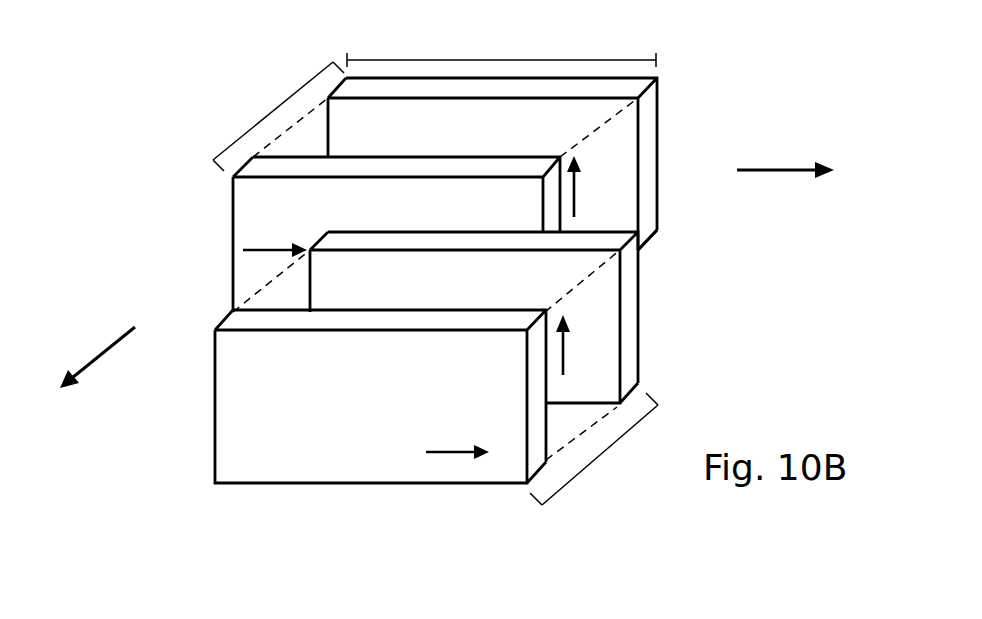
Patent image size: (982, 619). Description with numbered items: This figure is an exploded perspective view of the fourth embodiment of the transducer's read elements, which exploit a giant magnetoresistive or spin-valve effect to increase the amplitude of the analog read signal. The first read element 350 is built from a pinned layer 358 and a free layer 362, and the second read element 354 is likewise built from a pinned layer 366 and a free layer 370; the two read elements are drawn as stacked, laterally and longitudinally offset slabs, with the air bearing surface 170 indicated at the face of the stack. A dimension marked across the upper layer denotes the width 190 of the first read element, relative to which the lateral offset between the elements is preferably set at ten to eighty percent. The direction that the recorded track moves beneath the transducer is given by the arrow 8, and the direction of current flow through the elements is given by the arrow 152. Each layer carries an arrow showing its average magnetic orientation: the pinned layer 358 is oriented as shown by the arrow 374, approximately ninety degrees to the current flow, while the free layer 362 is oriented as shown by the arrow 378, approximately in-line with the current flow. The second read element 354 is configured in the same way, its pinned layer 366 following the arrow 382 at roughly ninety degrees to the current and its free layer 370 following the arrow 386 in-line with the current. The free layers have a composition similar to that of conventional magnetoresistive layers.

The arrow indicating track movement direction 8 is at (105, 357).
The arrow indicating direction of current flow 152 is at (777, 173).
The air bearing surface 170 is at (612, 243).
The width of the first read element 190 is at (548, 60).
The first read element 350 is at (272, 110).
The second read element 354 is at (602, 463).
The pinned layer 358 is at (648, 102).
The free layer 362 is at (250, 263).
The pinned layer 366 is at (627, 348).
The free layer 370 is at (233, 438).
The arrow indicating magnetic orientation of pinned layer 374 is at (573, 208).
The arrow indicating magnetic orientation of free layer 378 is at (270, 247).
The arrow indicating magnetic orientation of pinned layer 382 is at (563, 366).
The arrow indicating magnetic orientation of free layer 386 is at (453, 447).